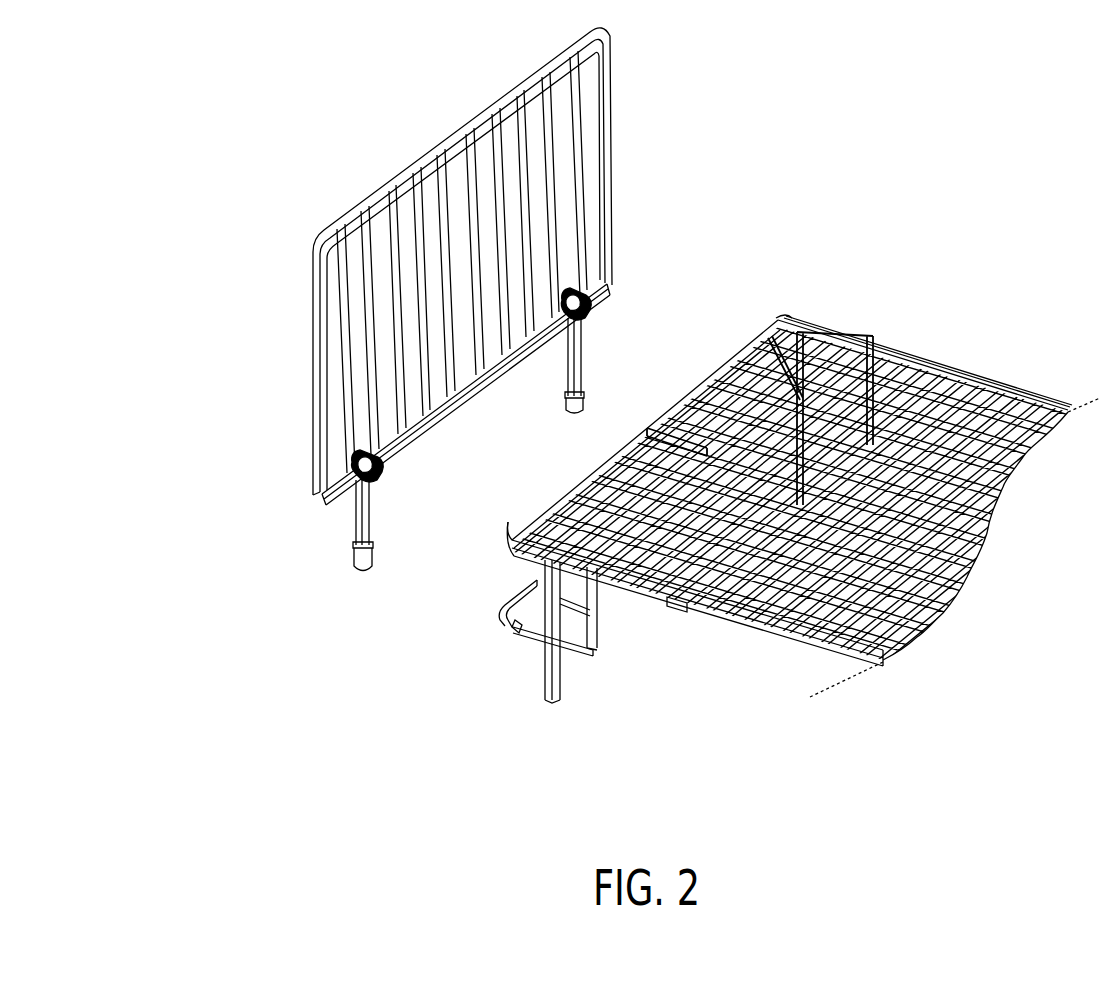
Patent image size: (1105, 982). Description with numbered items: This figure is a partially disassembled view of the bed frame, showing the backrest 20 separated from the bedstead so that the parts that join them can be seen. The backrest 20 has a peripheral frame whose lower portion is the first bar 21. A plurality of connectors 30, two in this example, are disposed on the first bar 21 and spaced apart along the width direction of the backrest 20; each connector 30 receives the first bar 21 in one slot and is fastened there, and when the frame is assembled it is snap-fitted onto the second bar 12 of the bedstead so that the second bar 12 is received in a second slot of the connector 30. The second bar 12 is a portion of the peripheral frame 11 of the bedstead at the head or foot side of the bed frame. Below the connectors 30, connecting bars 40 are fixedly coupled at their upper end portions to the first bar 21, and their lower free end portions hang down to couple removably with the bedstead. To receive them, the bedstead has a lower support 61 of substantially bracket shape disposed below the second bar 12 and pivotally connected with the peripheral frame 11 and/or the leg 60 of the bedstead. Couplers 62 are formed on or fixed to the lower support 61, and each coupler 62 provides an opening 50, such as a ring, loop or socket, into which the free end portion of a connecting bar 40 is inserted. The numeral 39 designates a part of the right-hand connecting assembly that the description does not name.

The peripheral frame 11 is at (940, 367).
The second bar 12 is at (858, 340).
The backrest 20 is at (610, 133).
The first bar 21 is at (452, 400).
The connector 30 is at (590, 302).
The support leg 39 is at (565, 330).
The connecting bar 40 is at (345, 517).
The opening 50 is at (503, 592).
The leg 60 is at (512, 637).
The lower support 61 is at (597, 648).
The coupler 62 is at (515, 637).